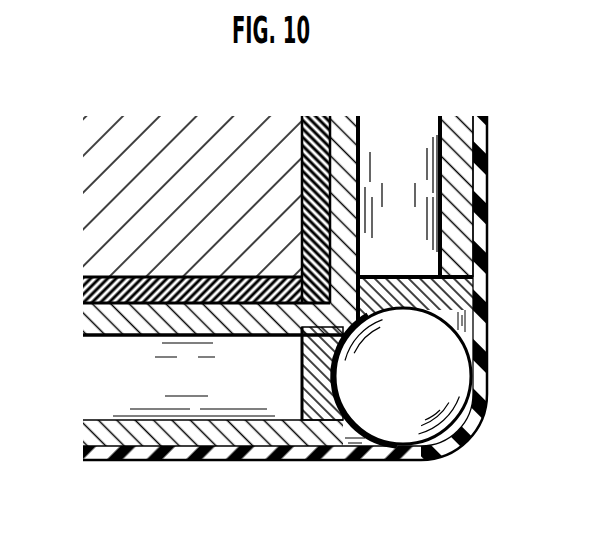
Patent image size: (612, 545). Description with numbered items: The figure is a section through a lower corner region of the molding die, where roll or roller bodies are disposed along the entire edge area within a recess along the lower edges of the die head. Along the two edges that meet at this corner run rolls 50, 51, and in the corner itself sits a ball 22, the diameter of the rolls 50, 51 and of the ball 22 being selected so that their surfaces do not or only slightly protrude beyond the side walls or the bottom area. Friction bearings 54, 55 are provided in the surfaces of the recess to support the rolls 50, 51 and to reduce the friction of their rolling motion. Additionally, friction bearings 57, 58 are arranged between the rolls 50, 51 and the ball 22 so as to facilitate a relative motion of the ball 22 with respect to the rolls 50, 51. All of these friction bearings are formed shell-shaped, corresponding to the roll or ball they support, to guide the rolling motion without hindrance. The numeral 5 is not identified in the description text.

The outer skin 5 is at (477, 172).
The ball 22 is at (447, 361).
The roll 50 is at (457, 234).
The roll 51 is at (232, 432).
The friction bearing 54 is at (312, 158).
The friction bearing 55 is at (97, 275).
The friction bearing 57 is at (463, 305).
The friction bearing 58 is at (343, 430).